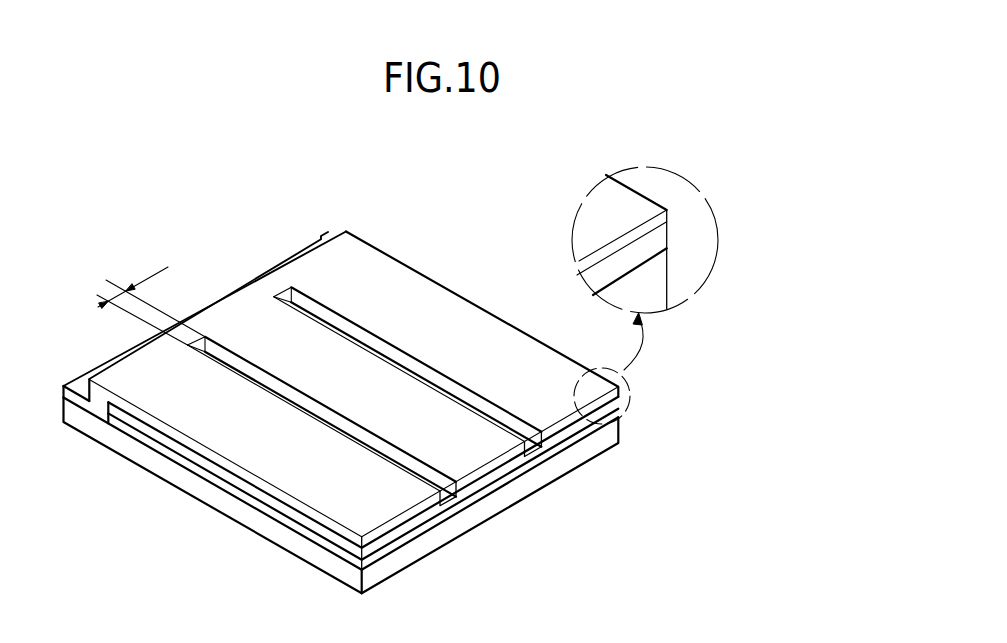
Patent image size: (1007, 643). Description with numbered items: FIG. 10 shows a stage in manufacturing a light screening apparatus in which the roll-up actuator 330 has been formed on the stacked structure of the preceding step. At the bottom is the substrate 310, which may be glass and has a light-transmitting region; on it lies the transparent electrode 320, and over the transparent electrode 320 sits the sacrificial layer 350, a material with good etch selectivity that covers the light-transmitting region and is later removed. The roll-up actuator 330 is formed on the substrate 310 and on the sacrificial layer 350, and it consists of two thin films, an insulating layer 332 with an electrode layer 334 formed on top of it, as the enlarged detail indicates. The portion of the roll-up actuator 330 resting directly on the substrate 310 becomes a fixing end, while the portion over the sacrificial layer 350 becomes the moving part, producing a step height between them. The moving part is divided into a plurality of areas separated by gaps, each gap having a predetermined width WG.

The substrate 310 is at (540, 485).
The transparent electrode 320 is at (392, 548).
The roll-up actuator 330 is at (470, 338).
The insulating layer 332 is at (657, 248).
The electrode layer 334 is at (657, 220).
The sacrificial layer 350 is at (591, 427).